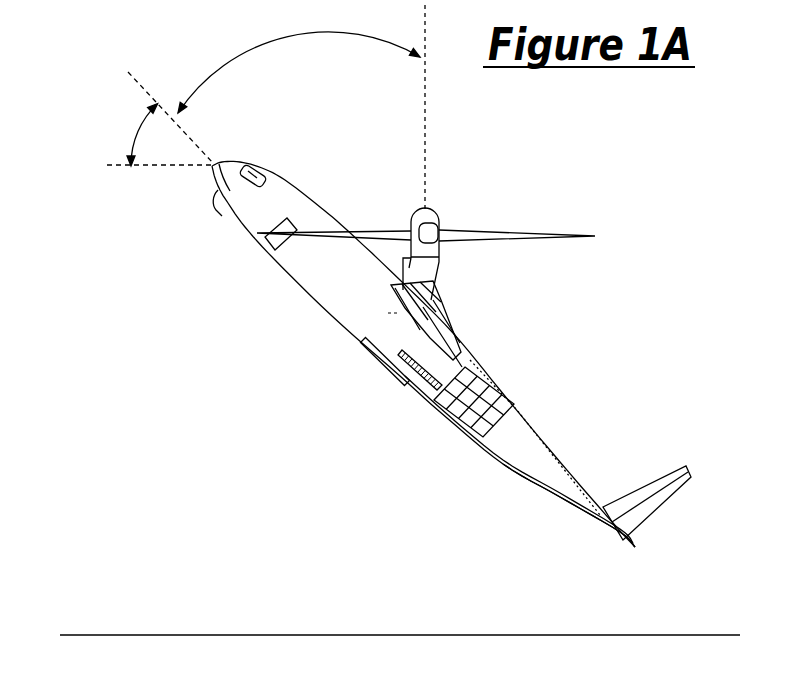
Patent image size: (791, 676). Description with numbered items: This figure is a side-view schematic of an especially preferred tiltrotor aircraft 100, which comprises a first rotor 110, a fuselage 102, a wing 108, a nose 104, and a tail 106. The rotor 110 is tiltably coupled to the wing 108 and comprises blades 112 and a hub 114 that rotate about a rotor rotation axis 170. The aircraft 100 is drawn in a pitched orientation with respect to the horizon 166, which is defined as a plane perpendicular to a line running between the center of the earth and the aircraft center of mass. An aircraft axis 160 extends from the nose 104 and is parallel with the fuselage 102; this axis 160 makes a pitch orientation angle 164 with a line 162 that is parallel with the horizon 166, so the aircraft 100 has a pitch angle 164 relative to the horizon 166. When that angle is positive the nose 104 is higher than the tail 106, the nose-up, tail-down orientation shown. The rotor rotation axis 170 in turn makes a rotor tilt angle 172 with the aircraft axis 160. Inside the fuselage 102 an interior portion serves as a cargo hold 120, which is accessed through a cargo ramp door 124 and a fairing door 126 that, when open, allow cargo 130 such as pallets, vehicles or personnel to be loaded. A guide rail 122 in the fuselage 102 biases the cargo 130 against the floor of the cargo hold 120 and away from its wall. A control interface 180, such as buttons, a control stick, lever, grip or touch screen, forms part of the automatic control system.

The tiltrotor aircraft 100 is at (203, 287).
The fuselage 102 is at (460, 335).
The nose 104 is at (207, 175).
The tail 106 is at (644, 512).
The wing 108 is at (337, 321).
The first rotor 110 is at (445, 222).
The blades 112 is at (520, 231).
The hub 114 is at (411, 220).
The cargo hold 120 is at (575, 462).
The guide rail 122 is at (406, 389).
The cargo ramp door 124 is at (487, 447).
The fairing door 126 is at (546, 494).
The cargo 130 is at (515, 401).
The aircraft axis 160 is at (138, 82).
The line parallel with the horizon 162 is at (143, 167).
The pitch orientation angle 164 is at (130, 136).
The horizon 166 is at (153, 635).
The rotor rotation axis 170 is at (427, 127).
The rotor tilt angle 172 is at (283, 38).
The control interface 180 is at (222, 204).